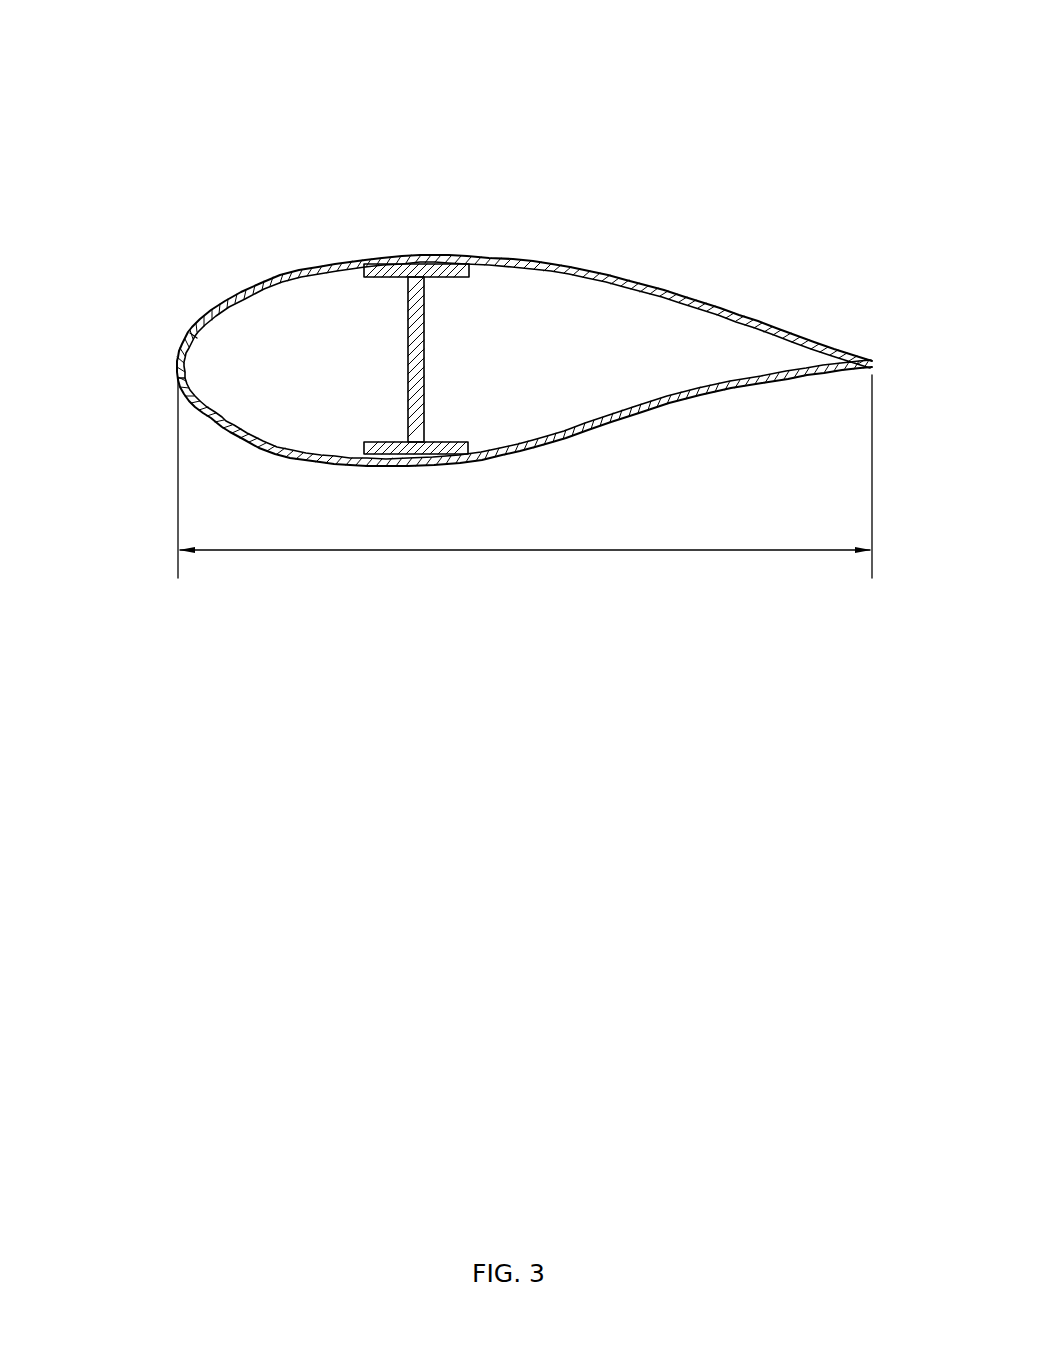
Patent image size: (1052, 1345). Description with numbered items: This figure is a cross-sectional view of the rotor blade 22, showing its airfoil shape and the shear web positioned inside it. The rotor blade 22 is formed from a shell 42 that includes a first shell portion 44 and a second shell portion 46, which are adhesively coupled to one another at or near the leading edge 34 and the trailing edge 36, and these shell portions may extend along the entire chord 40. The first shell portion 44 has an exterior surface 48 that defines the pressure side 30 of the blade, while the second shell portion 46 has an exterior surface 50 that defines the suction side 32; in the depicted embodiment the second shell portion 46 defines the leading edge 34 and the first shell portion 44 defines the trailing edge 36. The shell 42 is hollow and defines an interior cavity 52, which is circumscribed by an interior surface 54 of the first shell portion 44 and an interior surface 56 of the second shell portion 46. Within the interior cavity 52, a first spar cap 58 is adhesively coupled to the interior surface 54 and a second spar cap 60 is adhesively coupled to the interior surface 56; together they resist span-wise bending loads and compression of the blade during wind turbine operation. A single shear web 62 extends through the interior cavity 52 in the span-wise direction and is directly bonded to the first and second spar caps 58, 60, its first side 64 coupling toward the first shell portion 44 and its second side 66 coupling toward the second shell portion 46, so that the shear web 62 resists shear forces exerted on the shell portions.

The rotor blade 22 is at (124, 100).
The pressure side 30 is at (660, 398).
The suction side 32 is at (607, 270).
The leading edge 34 is at (178, 362).
The trailing edge 36 is at (873, 360).
The chord 40 is at (677, 550).
The shell 42 is at (145, 240).
The first shell portion 44 is at (282, 495).
The second shell portion 46 is at (333, 243).
The exterior surface 48 is at (540, 455).
The exterior surface 50 is at (418, 258).
The interior cavity 52 is at (267, 332).
The interior surface 54 is at (660, 400).
The interior surface 56 is at (632, 285).
The first spar cap 58 is at (452, 441).
The second spar cap 60 is at (445, 277).
The shear web 62 is at (408, 358).
The first side 64 is at (390, 433).
The second side 66 is at (375, 298).